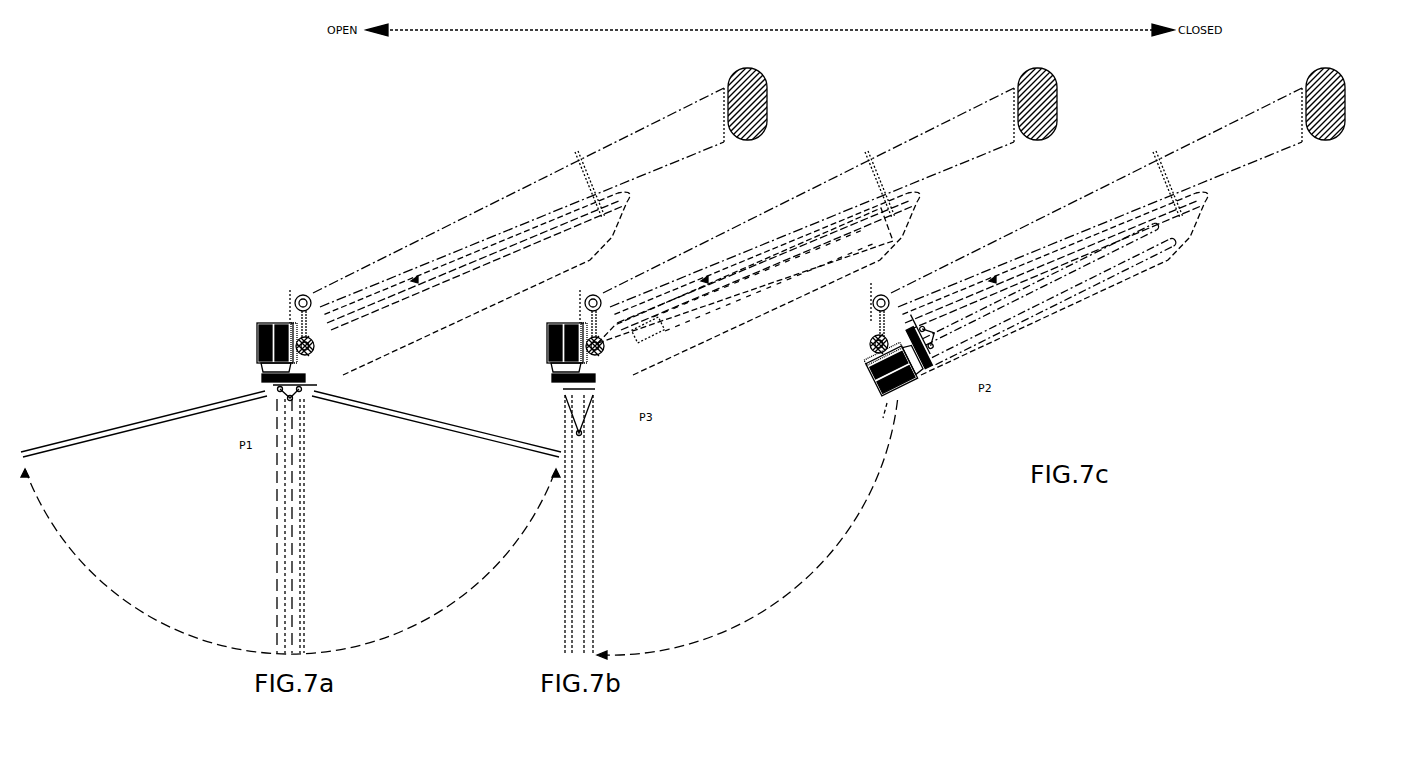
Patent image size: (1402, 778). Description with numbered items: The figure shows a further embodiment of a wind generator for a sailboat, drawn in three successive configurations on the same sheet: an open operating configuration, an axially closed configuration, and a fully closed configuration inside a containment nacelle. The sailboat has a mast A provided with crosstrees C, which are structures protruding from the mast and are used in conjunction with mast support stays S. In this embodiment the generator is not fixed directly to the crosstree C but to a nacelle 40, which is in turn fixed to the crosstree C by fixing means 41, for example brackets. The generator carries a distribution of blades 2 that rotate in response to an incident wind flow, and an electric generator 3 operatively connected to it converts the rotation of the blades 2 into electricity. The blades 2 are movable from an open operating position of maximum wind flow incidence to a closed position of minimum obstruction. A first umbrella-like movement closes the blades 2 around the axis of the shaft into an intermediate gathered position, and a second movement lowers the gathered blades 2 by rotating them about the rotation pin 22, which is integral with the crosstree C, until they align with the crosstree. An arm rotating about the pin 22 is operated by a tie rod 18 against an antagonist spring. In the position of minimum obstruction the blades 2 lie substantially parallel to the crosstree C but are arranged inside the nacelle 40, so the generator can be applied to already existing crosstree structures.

In FIG. 7A, the blades 2 is at (291, 507).
In FIG. 7B, the blades 2 is at (730, 433).
In FIG. 7C, the blades 2 is at (1052, 296).
In FIG. 7A, the electric generator 3 is at (261, 340).
In FIG. 7B, the electric generator 3 is at (571, 352).
In FIG. 7C, the electric generator 3 is at (897, 361).
In FIG. 7A, the tie rod 18 is at (475, 265).
In FIG. 7B, the tie rod 18 is at (765, 265).
In FIG. 7C, the tie rod 18 is at (1053, 265).
In FIG. 7A, the rotation pin 22 is at (324, 342).
In FIG. 7B, the rotation pin 22 is at (595, 346).
In FIG. 7C, the rotation pin 22 is at (879, 344).
In FIG. 7A, the nacelle 40 is at (476, 289).
In FIG. 7B, the nacelle 40 is at (766, 294).
In FIG. 7C, the nacelle 40 is at (1054, 289).
In FIG. 7A, the fixing means 41 is at (447, 222).
In FIG. 7B, the fixing means 41 is at (737, 223).
In FIG. 7C, the fixing means 41 is at (1027, 223).
In FIG. 7A, the mast A is at (746, 104).
In FIG. 7B, the mast A is at (1036, 104).
In FIG. 7C, the mast A is at (1318, 104).
In FIG. 7A, the crosstree C is at (518, 197).
In FIG. 7B, the crosstree C is at (808, 197).
In FIG. 7C, the crosstree C is at (1096, 197).
In FIG. 7A, the mast support stays S is at (289, 266).